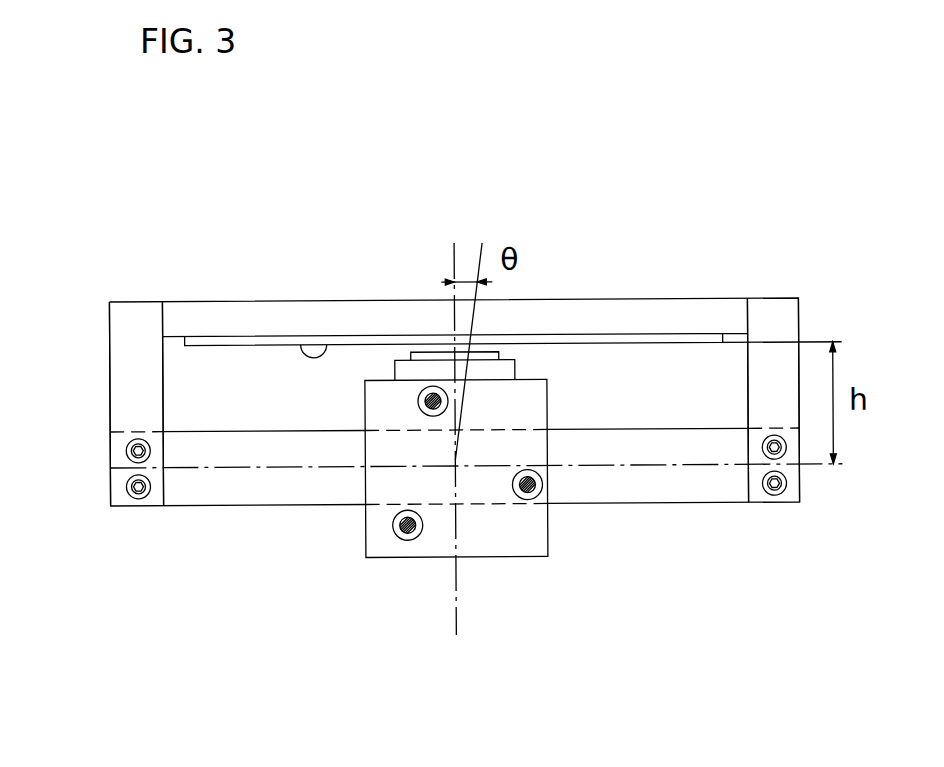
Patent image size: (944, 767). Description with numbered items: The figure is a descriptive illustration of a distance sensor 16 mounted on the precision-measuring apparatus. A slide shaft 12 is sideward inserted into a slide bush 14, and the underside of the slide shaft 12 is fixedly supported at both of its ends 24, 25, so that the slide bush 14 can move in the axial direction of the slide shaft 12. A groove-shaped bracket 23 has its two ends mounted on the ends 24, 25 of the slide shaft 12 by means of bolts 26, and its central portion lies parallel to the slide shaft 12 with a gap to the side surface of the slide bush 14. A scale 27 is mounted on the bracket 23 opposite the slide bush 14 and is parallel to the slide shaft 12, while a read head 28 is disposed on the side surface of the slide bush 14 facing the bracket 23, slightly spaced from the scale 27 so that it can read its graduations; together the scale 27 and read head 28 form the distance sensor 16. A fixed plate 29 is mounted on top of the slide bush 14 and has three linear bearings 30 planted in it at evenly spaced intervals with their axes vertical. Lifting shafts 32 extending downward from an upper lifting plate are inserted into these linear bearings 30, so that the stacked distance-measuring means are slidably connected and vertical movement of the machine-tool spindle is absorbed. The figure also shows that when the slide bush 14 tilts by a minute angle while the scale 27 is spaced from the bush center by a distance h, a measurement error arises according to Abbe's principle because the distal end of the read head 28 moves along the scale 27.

The slide shaft 12 is at (216, 492).
The slide bush 14 is at (466, 400).
The distance sensor 16 is at (425, 231).
The groove-shaped bracket 23 is at (273, 316).
The end of the slide shaft 24 is at (816, 494).
The end of the slide shaft 25 is at (92, 471).
The bolts 26 is at (132, 488).
The scale 27 is at (328, 349).
The read head 28 is at (500, 368).
The fixed plate 29 is at (540, 400).
The linear bearings 30 is at (461, 544).
The lifting shafts 32 is at (410, 533).